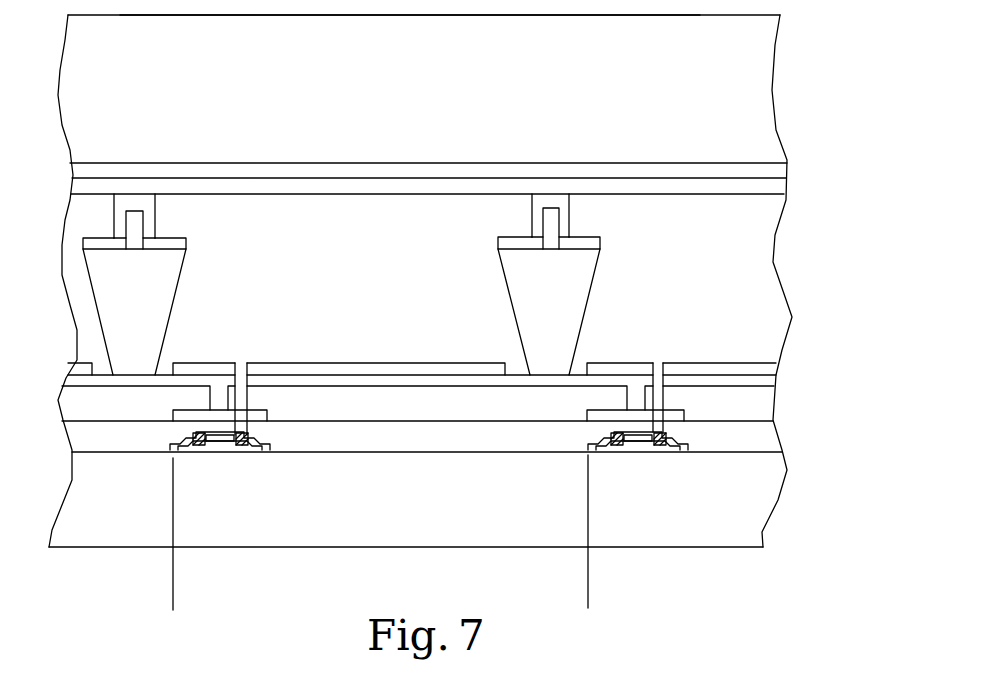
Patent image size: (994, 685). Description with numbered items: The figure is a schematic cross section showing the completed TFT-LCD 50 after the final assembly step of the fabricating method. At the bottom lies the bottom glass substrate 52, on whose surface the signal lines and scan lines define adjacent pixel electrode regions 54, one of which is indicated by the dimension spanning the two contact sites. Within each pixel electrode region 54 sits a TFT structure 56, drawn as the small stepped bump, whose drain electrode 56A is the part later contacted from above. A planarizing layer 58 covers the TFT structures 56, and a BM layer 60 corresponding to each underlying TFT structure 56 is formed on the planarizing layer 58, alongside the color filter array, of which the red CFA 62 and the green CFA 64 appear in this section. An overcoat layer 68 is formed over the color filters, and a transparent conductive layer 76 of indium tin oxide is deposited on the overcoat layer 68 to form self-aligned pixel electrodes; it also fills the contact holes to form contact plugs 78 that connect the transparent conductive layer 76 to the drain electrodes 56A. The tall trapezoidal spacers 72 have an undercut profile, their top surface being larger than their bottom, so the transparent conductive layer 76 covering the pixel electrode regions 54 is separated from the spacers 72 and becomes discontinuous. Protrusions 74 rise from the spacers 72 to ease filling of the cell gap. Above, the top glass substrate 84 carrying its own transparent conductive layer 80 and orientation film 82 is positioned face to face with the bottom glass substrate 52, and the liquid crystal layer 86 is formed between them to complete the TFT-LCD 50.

The TFT-LCD 50 is at (791, 70).
The bottom glass substrate 52 is at (492, 527).
The pixel electrode region 54 is at (588, 595).
The TFT structure 56 is at (143, 446).
The drain electrode 56A is at (243, 452).
The planarizing layer 58 is at (78, 438).
The BM layer 60 is at (198, 413).
The red CFA 62 is at (423, 405).
The green CFA 64 is at (762, 402).
The overcoat layer 68 is at (75, 382).
The spacer 72 is at (580, 298).
The protrusion 74 is at (553, 218).
The transparent conductive layer 76 is at (552, 198).
The contact plug 78 is at (242, 380).
The transparent conductive layer 80 is at (773, 169).
The orientation film 82 is at (773, 185).
The top glass substrate 84 is at (422, 109).
The liquid crystal layer 86 is at (767, 265).